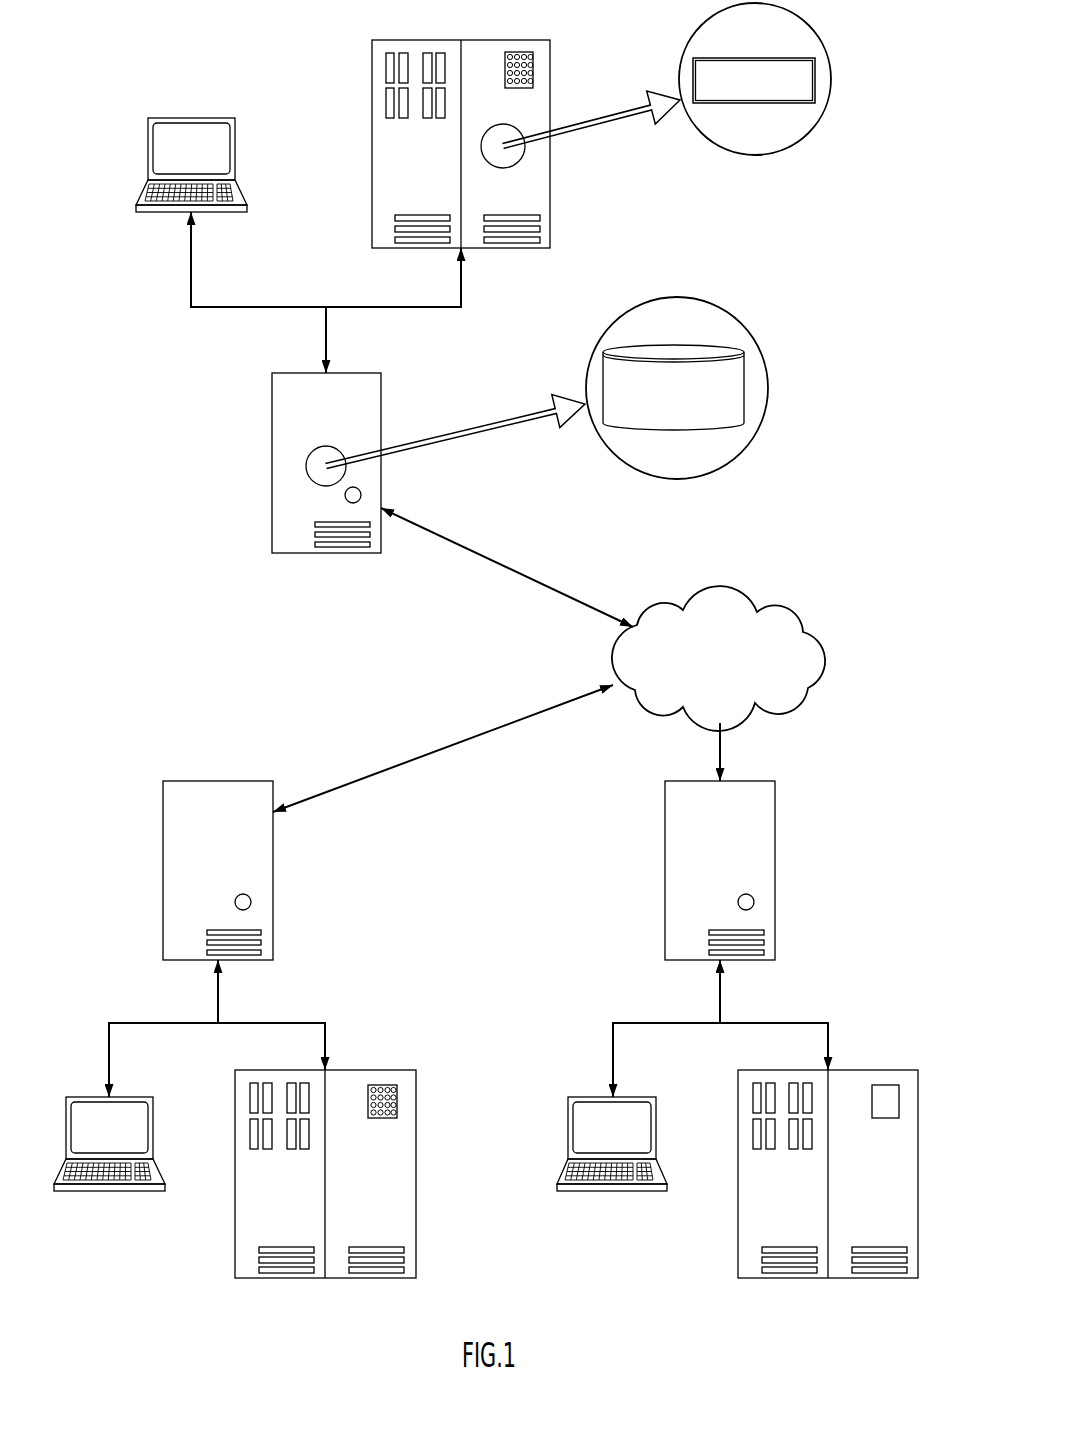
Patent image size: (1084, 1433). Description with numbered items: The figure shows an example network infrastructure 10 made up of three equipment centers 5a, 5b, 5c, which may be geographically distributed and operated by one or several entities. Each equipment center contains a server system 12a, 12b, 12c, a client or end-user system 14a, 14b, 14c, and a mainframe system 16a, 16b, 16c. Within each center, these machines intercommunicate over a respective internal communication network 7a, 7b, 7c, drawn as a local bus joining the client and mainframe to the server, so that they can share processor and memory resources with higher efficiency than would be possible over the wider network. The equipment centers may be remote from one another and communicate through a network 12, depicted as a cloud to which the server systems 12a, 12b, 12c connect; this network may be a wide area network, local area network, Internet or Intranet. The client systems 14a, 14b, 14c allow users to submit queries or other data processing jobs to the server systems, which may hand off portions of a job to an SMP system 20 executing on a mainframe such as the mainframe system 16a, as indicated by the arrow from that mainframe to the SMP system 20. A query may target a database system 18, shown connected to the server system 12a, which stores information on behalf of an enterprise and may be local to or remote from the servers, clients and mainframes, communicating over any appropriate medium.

The network infrastructure 10 is at (100, 55).
The equipment center 5a is at (282, 104).
The equipment center 5b is at (112, 773).
The equipment center 5c is at (617, 776).
The client system 14a is at (170, 118).
The client system 14b is at (153, 1128).
The client system 14c is at (656, 1128).
The mainframe system 16a is at (509, 40).
The mainframe system 16b is at (416, 1173).
The mainframe system 16c is at (918, 1173).
The internal communication network 7a is at (370, 307).
The internal communication network 7b is at (275, 1023).
The internal communication network 7c is at (778, 1023).
The server system 12a is at (381, 400).
The server system 12b is at (217, 781).
The server system 12c is at (775, 870).
The network 12 is at (800, 612).
The database system 18 is at (680, 345).
The SMP system 20 is at (755, 58).